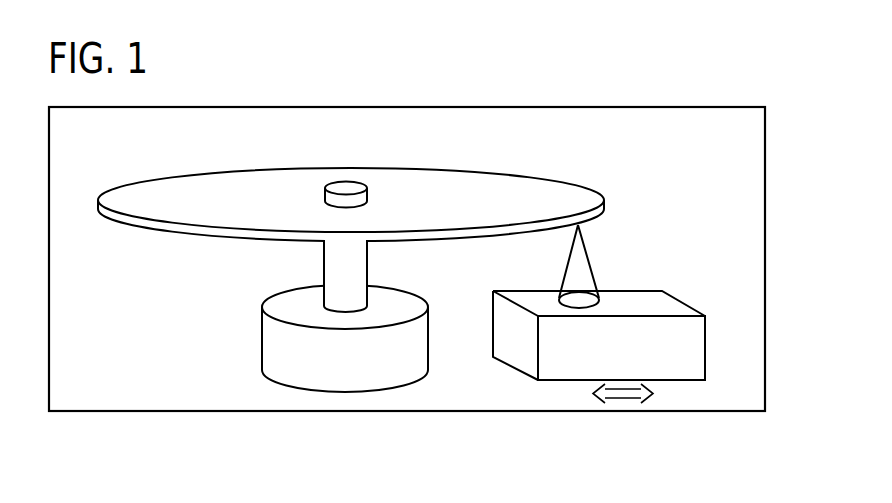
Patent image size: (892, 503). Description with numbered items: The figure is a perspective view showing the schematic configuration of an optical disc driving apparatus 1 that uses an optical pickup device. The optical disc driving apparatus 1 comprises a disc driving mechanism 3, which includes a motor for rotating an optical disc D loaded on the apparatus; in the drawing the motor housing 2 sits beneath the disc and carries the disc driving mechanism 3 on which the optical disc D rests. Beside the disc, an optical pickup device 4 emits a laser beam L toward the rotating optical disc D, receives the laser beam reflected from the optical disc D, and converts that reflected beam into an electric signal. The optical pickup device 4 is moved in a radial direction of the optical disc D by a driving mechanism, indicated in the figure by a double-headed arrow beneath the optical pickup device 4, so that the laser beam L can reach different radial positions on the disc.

The optical disc driving apparatus 1 is at (699, 90).
The spindle motor 2 is at (283, 372).
The disc driving mechanism 3 is at (297, 285).
The optical pickup device 4 is at (677, 355).
The optical disc D is at (487, 180).
The laser beam L is at (580, 282).